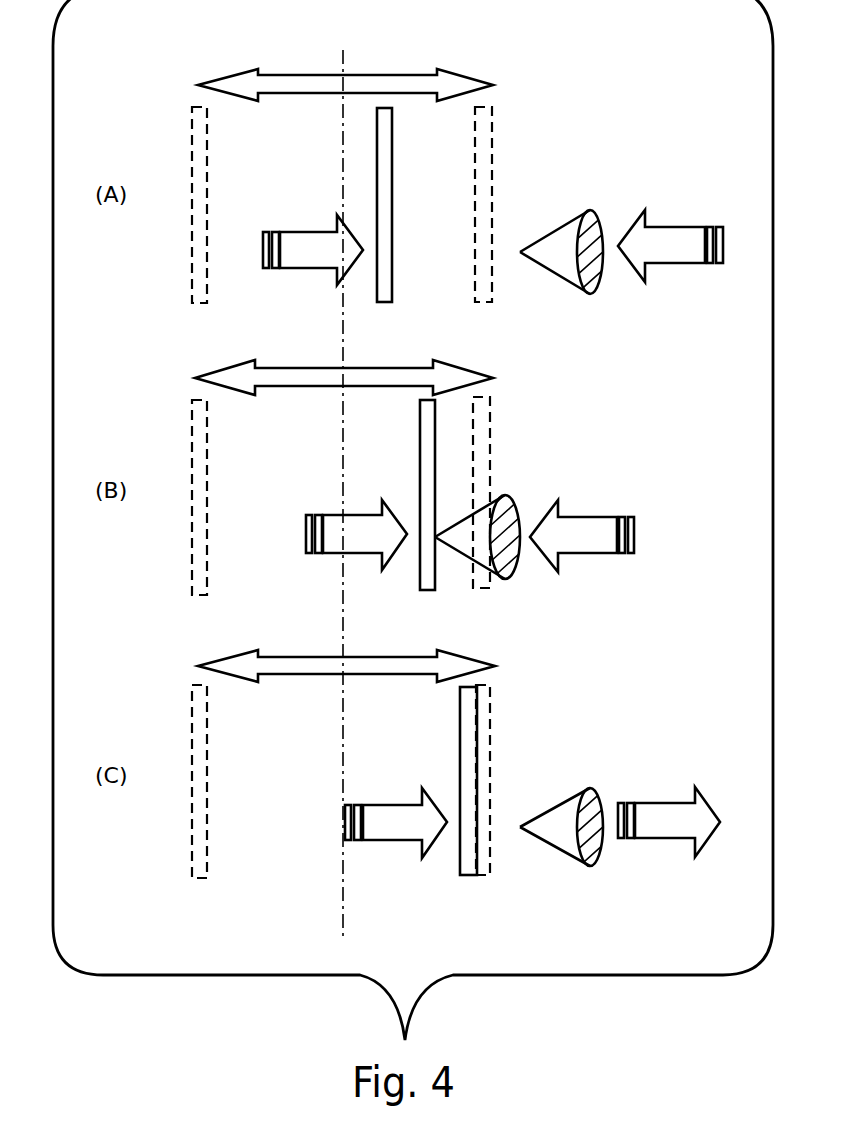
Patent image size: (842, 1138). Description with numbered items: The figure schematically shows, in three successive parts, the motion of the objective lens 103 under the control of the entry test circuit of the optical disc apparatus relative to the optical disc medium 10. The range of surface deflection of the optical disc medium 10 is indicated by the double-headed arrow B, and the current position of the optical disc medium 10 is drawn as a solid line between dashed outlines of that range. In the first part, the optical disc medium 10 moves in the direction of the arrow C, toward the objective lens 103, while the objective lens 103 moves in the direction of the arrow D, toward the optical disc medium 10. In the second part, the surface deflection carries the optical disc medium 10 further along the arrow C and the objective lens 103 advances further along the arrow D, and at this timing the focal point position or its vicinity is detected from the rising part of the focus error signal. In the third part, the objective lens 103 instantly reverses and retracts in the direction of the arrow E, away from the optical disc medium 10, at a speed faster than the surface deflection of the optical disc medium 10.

The optical disc medium 10 is at (392, 178).
The objective lens 103 is at (594, 222).
The arrow B is at (386, 72).
The arrow C is at (355, 536).
The arrow D is at (626, 391).
The arrow E is at (669, 822).